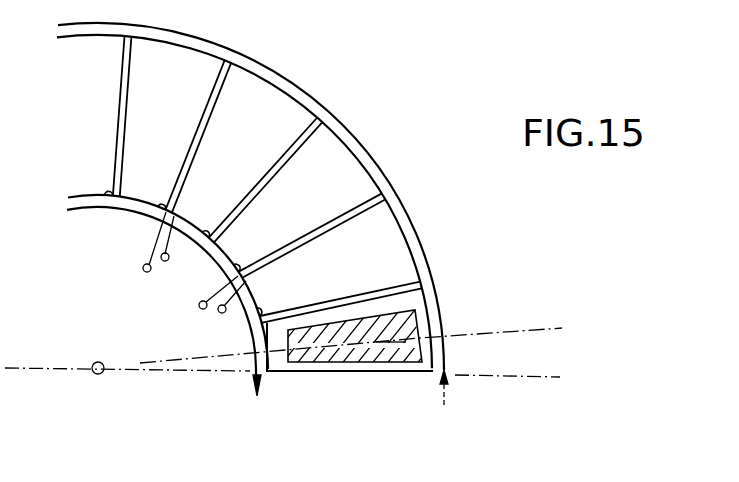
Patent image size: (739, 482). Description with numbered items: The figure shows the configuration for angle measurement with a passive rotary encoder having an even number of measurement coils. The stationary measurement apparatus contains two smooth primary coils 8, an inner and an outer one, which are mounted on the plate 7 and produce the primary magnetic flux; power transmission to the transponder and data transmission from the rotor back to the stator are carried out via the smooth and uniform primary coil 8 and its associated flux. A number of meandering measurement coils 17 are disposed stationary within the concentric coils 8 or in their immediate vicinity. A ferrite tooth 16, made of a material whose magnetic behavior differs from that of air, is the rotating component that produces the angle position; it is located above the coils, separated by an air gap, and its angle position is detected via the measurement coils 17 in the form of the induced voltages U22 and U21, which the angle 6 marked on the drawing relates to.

The primary coil 8 is at (392, 176).
The meandering measurement coil 17 is at (215, 56).
The ferrite tooth 16 is at (412, 322).
The plate 7 is at (122, 332).
The pitch angle 6 is at (523, 345).
The induced voltage U22 is at (147, 260).
The induced voltage U21 is at (213, 312).